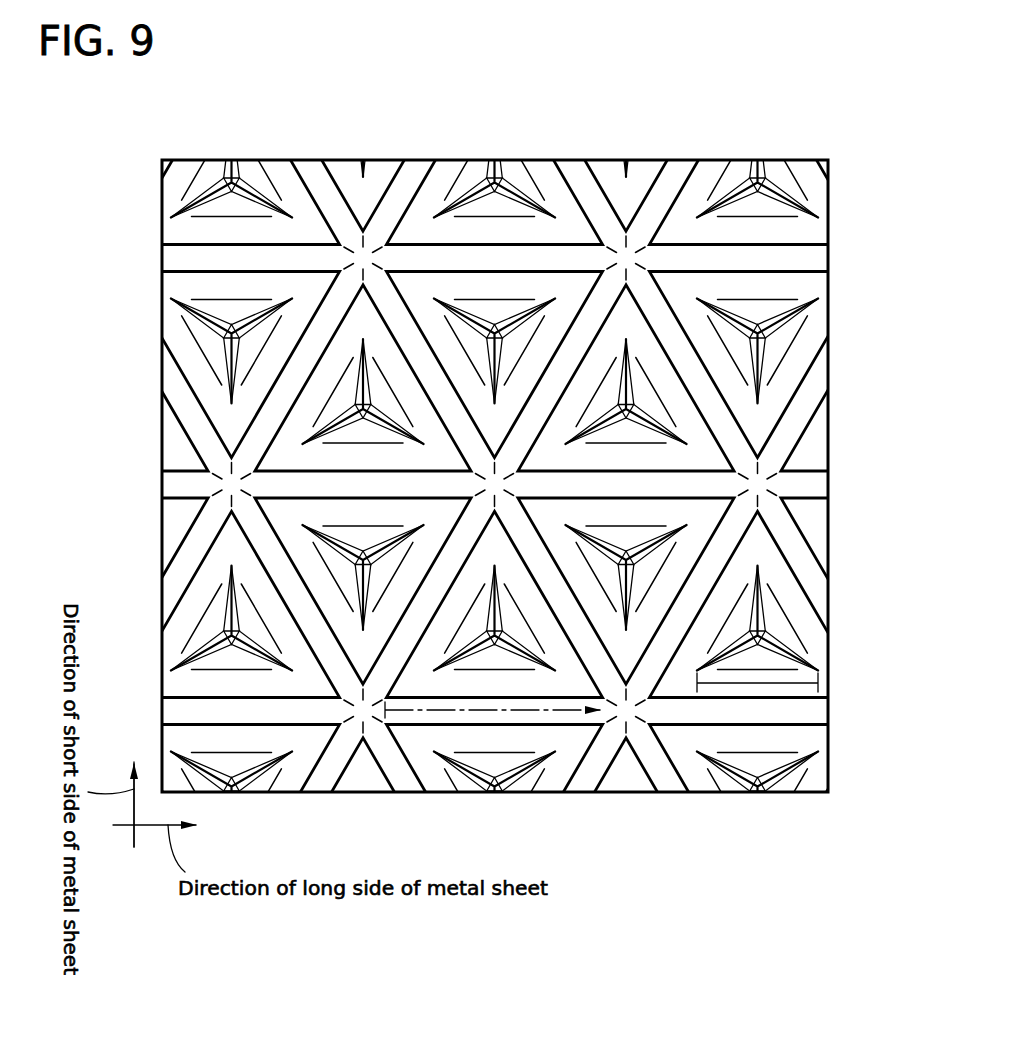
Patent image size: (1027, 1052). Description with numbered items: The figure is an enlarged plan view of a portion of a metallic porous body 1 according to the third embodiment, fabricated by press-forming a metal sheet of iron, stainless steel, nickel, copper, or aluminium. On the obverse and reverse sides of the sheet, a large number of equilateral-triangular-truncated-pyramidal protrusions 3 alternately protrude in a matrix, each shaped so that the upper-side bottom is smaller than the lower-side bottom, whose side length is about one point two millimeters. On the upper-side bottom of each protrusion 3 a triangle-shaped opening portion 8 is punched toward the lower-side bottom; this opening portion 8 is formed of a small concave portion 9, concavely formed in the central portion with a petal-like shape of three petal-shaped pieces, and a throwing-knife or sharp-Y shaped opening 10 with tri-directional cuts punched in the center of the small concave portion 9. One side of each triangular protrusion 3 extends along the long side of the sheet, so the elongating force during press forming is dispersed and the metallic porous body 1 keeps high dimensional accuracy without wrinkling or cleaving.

The metallic porous body 1 is at (252, 138).
The protrusion 3 is at (812, 739).
The opening portion 8 is at (785, 333).
The small concave portion 9 is at (768, 367).
The opening 10 is at (770, 311).